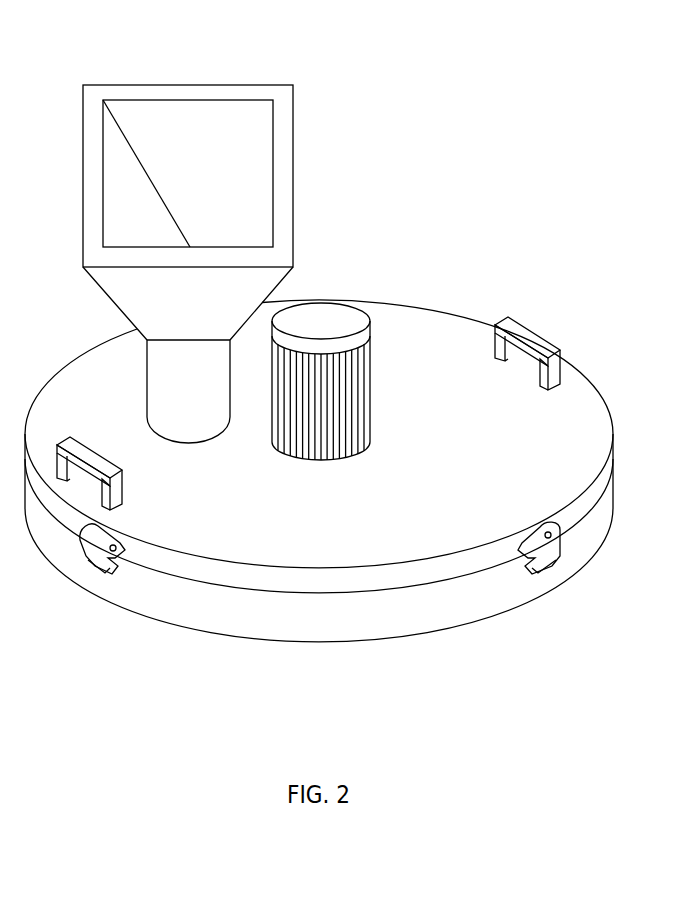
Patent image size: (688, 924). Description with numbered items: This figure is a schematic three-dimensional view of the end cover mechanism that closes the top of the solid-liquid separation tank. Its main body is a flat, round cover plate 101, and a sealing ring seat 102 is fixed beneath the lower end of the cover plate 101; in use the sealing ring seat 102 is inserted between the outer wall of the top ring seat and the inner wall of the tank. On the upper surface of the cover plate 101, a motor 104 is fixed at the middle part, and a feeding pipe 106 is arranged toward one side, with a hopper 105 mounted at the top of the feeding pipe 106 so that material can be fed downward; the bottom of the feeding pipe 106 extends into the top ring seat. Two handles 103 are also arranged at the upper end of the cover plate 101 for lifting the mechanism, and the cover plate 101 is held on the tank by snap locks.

The cover plate 101 is at (457, 517).
The sealing ring seat 102 is at (260, 620).
The handles 103 is at (537, 330).
The motor 104 is at (333, 337).
The hopper 105 is at (192, 140).
The feeding pipe 106 is at (182, 393).